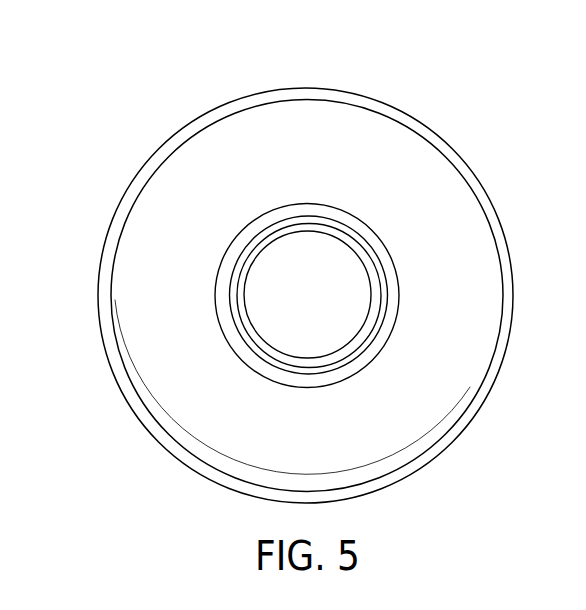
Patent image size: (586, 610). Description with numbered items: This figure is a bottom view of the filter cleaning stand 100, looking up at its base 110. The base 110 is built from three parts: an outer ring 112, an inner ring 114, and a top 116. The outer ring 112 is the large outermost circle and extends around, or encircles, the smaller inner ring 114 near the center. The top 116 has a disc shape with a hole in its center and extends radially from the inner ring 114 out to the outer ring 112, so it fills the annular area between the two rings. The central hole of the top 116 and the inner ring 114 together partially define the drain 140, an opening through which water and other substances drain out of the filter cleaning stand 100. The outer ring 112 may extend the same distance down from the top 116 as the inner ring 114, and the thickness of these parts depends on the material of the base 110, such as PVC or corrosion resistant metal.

The filter cleaning stand 100 is at (176, 61).
The base 110 is at (153, 312).
The outer ring 112 is at (165, 143).
The inner ring 114 is at (233, 274).
The top 116 is at (193, 380).
The drain 140 is at (333, 317).